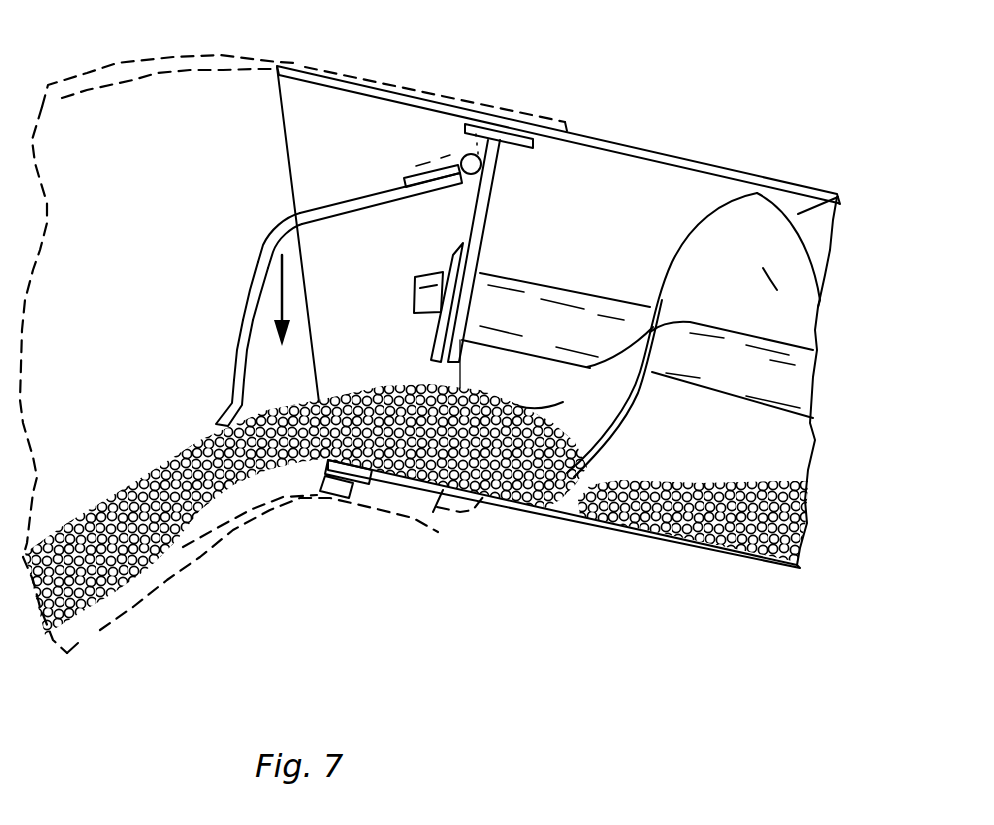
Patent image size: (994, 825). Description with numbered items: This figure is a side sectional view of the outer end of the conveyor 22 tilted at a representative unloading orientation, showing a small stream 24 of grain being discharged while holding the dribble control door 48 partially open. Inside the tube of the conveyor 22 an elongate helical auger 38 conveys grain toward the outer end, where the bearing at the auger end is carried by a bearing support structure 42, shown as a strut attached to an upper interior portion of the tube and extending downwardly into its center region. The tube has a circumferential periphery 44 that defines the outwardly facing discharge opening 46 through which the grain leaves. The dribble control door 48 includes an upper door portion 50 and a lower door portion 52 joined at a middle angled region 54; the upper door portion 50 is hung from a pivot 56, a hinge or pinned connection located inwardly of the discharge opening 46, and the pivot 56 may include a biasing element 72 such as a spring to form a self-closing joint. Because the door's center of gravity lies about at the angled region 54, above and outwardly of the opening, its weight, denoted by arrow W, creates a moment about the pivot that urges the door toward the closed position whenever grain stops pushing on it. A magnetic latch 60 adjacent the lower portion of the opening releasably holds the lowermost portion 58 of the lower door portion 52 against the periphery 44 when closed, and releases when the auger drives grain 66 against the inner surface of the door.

The conveyor 22 is at (694, 150).
The stream 24 is at (167, 453).
The helical auger 38 is at (829, 191).
The bearing support structure 42 is at (491, 197).
The circumferential periphery 44 is at (284, 130).
The discharge opening 46 is at (343, 358).
The dribble control door 48 is at (238, 297).
The upper door portion 50 is at (347, 200).
The lower door portion 52 is at (238, 340).
The middle angled region 54 is at (281, 224).
The pivot 56 is at (457, 156).
The lowermost portion 58 is at (223, 413).
The latch 60 is at (330, 500).
The grain 66 is at (389, 388).
The biasing element 72 is at (455, 163).
The arrow W is at (283, 280).